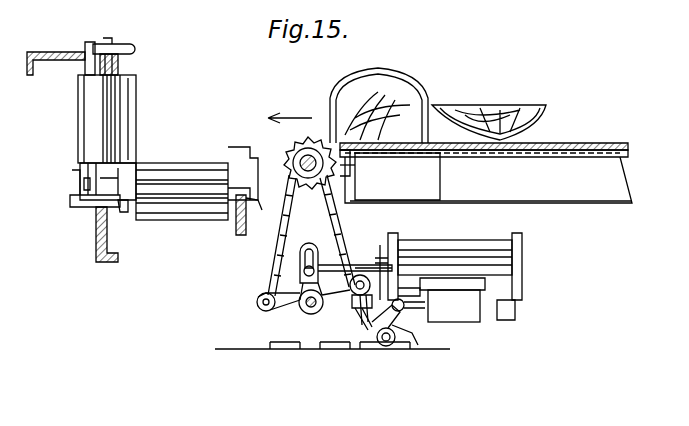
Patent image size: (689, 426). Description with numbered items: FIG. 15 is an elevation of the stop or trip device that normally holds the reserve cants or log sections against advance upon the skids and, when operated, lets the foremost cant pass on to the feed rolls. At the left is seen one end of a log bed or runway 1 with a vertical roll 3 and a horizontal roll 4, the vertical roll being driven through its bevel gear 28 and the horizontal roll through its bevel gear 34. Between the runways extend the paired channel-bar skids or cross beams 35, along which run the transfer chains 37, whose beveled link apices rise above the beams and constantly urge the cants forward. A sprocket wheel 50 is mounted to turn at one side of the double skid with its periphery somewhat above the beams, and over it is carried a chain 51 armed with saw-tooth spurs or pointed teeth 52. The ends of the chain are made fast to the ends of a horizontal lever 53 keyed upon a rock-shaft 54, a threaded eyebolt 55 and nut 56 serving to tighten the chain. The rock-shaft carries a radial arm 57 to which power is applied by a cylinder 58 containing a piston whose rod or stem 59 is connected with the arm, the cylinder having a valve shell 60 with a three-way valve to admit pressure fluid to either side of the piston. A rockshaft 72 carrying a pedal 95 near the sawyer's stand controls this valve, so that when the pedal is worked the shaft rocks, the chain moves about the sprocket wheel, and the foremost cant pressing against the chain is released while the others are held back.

The log bed or runway 1 is at (172, 250).
The vertical roll 3 is at (131, 118).
The horizontal roll 4 is at (165, 167).
The bevel gear 28 is at (131, 50).
The bevel gear 34 is at (84, 180).
The skid or cross beam 35 is at (488, 180).
The transfer chain 37 is at (556, 149).
The sprocket wheel 50 is at (310, 177).
The chain 51 is at (284, 244).
The spur or pointed tooth 52 is at (286, 144).
The horizontal lever 53 is at (282, 306).
The rock-shaft 54 is at (313, 313).
The threaded eyebolt 55 is at (364, 328).
The nut 56 is at (350, 318).
The radial arm 57 is at (305, 283).
The cylinder 58 is at (460, 246).
The piston rod or stem 59 is at (354, 282).
The valve shell 60 is at (452, 308).
The rockshaft 72 is at (389, 346).
The pedal 95 is at (408, 328).